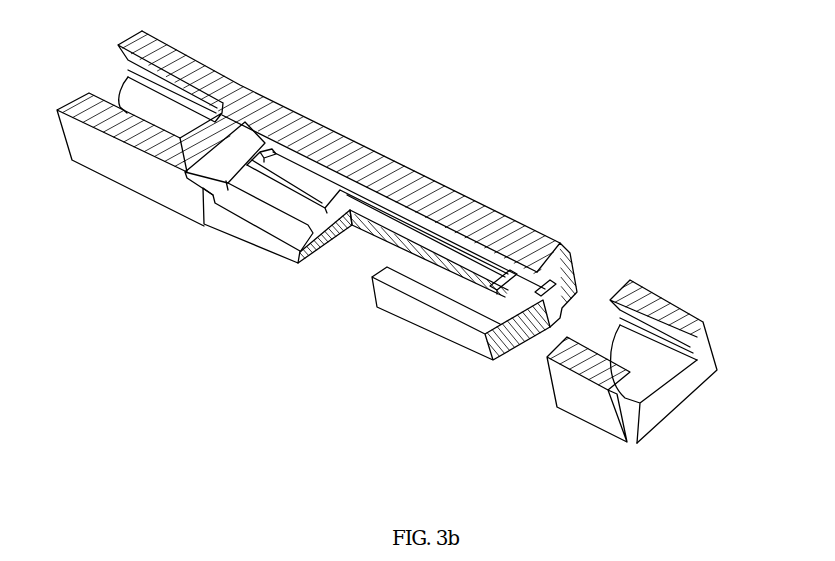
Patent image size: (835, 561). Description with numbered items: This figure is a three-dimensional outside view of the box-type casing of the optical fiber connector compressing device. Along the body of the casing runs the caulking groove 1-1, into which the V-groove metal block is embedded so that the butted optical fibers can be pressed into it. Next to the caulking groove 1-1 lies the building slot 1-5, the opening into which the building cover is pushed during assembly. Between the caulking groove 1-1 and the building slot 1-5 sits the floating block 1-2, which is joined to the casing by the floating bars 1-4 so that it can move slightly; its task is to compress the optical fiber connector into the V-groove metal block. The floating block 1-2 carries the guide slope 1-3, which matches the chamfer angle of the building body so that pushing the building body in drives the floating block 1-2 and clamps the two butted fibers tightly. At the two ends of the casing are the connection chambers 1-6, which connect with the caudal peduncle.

The caulking groove 1-1 is at (320, 217).
The floating block 1-2 is at (347, 188).
The guide slope 1-3 is at (290, 178).
The floating bars 1-4 is at (265, 148).
The building slot 1-5 is at (215, 168).
The connection chamber 1-6 is at (135, 105).